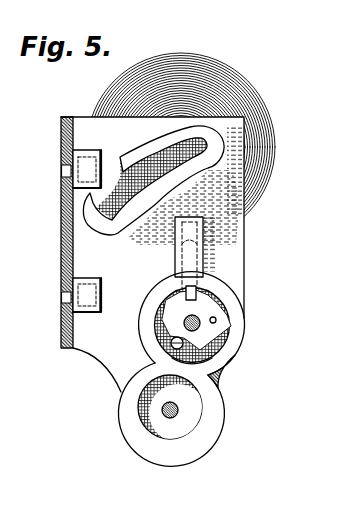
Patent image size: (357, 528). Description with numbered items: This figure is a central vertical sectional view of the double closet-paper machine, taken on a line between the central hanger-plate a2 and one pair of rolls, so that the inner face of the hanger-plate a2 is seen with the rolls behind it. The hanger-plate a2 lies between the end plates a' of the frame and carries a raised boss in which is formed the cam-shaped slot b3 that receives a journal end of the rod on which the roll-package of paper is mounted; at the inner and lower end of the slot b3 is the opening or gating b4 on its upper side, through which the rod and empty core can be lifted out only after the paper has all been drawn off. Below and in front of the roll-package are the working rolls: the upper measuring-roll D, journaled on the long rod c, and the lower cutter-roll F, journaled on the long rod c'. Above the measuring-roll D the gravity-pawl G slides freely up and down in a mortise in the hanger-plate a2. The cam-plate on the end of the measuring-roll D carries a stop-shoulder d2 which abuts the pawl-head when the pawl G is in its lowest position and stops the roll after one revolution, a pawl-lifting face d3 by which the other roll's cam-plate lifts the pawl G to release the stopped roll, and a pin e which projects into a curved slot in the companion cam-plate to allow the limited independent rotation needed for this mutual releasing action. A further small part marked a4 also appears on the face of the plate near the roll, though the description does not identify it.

The central hanger-plate a2 is at (152, 254).
The cam-shaped slot b3 is at (156, 162).
The opening or gating b4 is at (106, 182).
The gravity-pawl G is at (185, 294).
The measuring-roll D is at (222, 340).
The stop-shoulder d2 is at (204, 290).
The pawl-lifting face d3 is at (187, 362).
The end plate a' is at (196, 320).
The rod c is at (185, 322).
The pin e is at (215, 317).
The screw a4 is at (172, 339).
The cutter-roll F is at (171, 414).
The rod c' is at (176, 409).